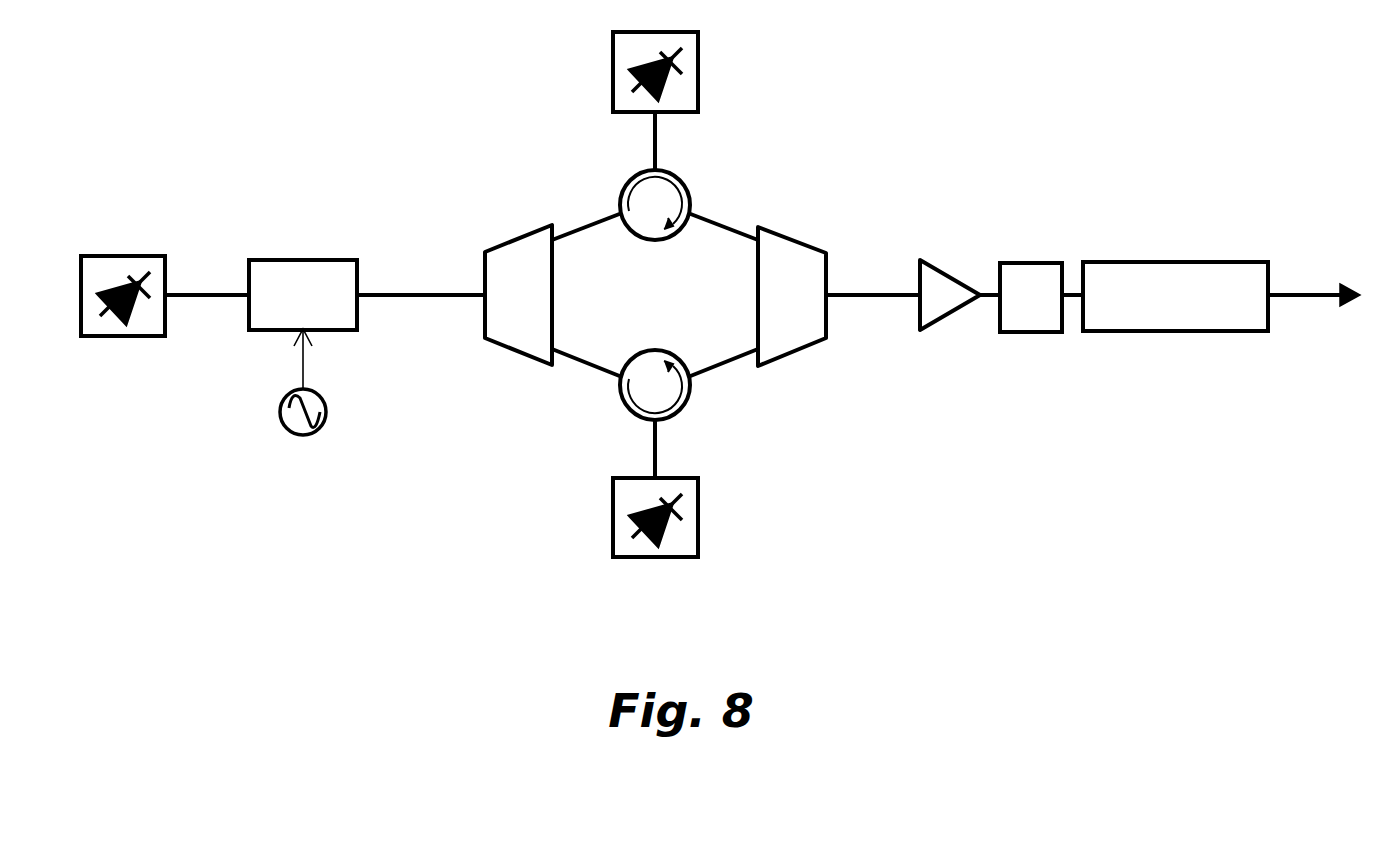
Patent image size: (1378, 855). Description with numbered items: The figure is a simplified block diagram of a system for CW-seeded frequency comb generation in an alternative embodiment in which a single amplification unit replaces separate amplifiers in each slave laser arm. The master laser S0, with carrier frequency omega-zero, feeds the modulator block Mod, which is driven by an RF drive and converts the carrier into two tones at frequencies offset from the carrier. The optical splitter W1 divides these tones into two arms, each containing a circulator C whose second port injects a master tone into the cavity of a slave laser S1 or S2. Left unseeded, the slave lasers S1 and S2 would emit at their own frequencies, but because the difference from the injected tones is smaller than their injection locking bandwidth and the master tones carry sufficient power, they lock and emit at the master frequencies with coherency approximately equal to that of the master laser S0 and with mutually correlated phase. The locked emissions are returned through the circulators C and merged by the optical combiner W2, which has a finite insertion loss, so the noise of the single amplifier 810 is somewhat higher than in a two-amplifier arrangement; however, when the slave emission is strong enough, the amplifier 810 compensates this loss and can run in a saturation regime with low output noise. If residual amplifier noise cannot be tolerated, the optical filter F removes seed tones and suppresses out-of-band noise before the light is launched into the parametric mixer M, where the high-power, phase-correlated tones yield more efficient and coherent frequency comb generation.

The amplifier 810 is at (932, 263).
The master laser S0 is at (97, 296).
The slave laser S1 is at (685, 72).
The slave laser S2 is at (685, 517).
The modulator block Mod is at (303, 295).
The optical splitter W1 is at (518, 295).
The optical combiner W2 is at (792, 296).
The circulator C is at (661, 295).
The optical filter F is at (1031, 297).
The parametric mixer M is at (1175, 296).